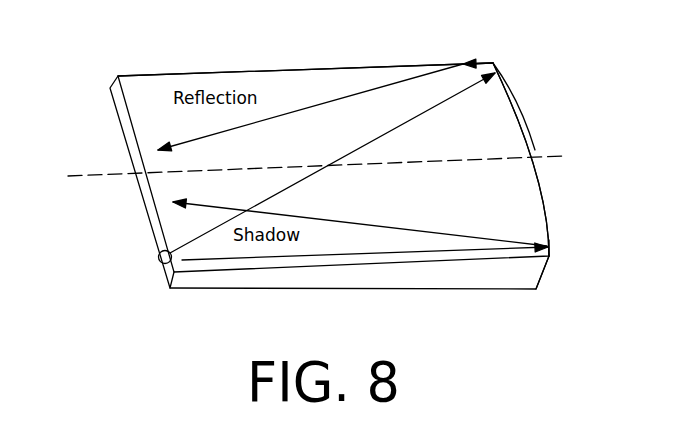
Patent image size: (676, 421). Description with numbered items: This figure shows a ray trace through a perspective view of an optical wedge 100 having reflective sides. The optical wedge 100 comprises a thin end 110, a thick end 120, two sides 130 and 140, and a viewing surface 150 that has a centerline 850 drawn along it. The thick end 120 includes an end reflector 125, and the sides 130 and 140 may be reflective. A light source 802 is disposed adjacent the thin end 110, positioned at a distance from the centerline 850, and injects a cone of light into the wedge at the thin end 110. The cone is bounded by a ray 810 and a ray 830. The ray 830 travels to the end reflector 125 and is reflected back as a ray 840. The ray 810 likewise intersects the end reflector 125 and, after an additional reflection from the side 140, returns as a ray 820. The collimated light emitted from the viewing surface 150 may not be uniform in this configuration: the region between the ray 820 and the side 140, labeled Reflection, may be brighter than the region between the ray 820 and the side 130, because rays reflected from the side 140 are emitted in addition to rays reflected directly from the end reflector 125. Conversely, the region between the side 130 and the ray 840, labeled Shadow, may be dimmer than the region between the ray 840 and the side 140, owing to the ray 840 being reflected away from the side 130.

The optical wedge 100 is at (170, 60).
The thin end 110 is at (113, 103).
The thick end 120 is at (549, 180).
The end reflector 125 is at (551, 238).
The side 130 is at (427, 278).
The side 140 is at (278, 70).
The viewing surface 150 is at (502, 124).
The light source 802 is at (158, 258).
The ray 810 is at (388, 131).
The ray 820 is at (196, 143).
The ray 830 is at (323, 255).
The ray 840 is at (365, 223).
The centerline 850 is at (295, 172).